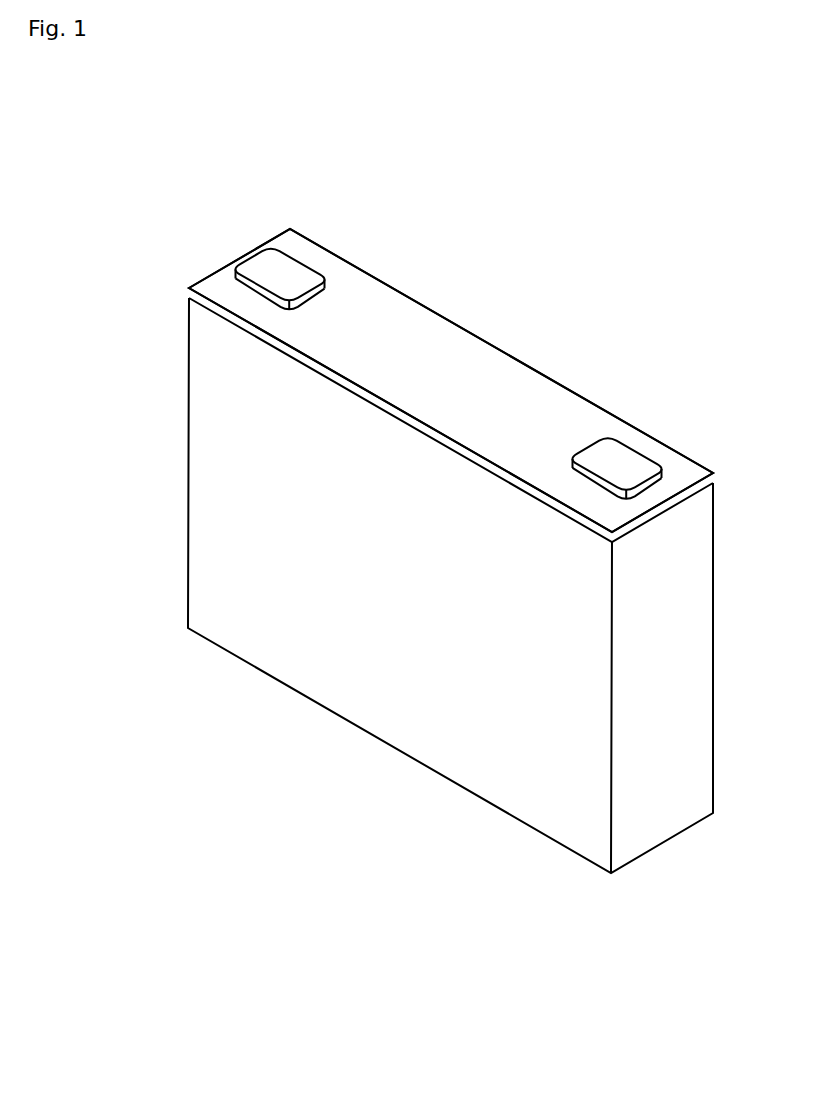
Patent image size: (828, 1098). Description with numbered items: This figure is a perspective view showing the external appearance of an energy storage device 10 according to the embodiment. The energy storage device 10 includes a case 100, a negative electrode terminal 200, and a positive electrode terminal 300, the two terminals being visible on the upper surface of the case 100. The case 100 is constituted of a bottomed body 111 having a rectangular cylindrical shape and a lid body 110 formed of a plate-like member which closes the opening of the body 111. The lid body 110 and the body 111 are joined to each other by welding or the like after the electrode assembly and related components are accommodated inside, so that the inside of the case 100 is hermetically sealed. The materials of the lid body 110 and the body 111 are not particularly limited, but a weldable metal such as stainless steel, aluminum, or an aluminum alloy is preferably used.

The energy storage device 10 is at (602, 222).
The case 100 is at (113, 407).
The lid body 110 is at (355, 353).
The body 111 is at (212, 465).
The negative electrode terminal 200 is at (625, 455).
The positive electrode terminal 300 is at (293, 267).